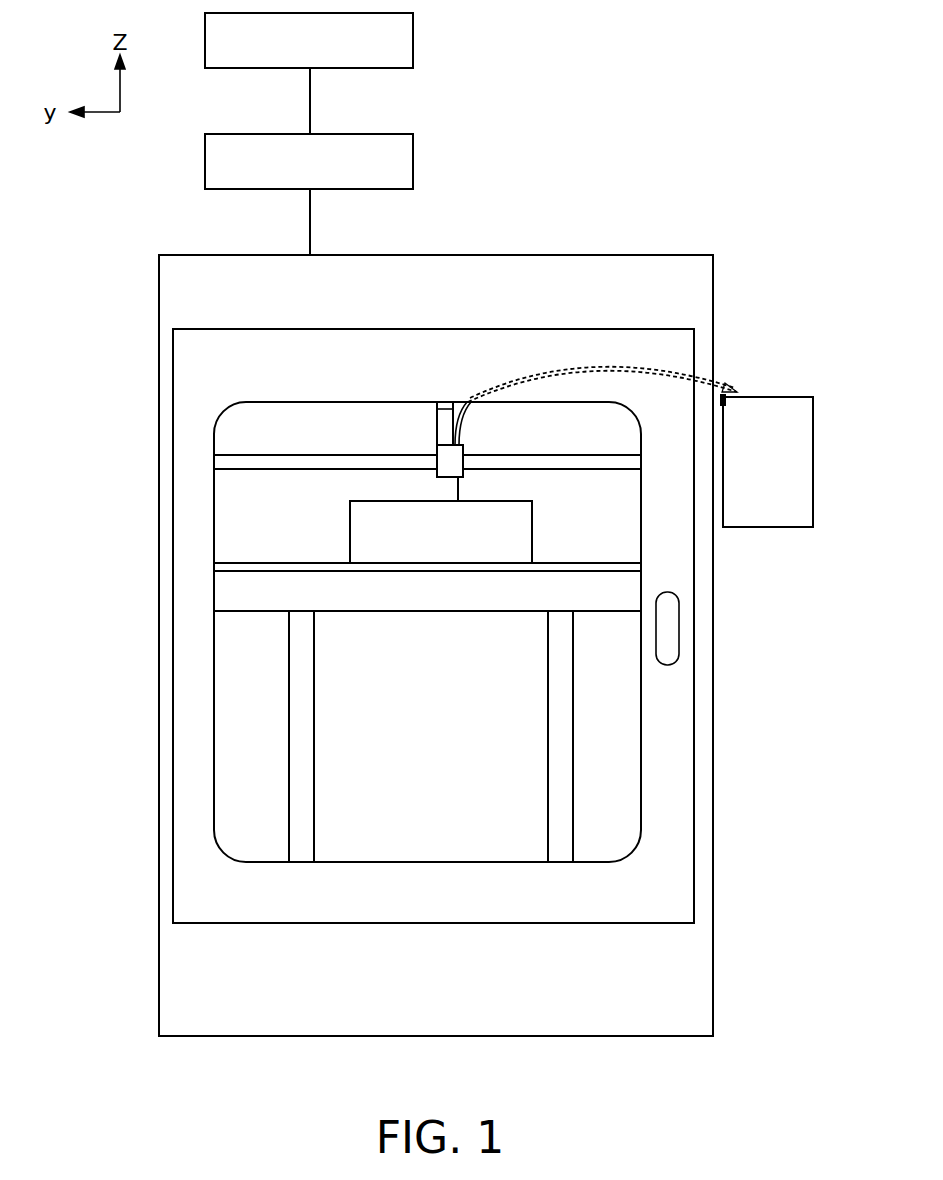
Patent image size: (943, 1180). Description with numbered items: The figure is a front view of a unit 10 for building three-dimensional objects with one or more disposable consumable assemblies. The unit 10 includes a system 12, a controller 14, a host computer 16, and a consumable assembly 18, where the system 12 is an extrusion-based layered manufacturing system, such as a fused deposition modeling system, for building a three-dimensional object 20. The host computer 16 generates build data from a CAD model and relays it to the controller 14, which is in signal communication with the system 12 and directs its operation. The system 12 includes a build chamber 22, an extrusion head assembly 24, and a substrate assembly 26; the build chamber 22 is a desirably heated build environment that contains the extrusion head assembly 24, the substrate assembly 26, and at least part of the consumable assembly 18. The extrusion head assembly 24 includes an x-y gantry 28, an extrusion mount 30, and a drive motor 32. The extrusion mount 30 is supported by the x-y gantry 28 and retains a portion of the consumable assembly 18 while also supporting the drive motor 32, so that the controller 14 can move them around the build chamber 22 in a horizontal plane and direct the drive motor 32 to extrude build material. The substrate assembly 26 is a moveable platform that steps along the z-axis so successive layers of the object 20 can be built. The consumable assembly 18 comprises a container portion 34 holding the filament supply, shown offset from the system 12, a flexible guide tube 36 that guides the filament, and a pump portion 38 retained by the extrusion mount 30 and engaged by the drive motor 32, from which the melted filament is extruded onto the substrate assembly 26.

The unit 10 is at (745, 175).
The system 12 is at (155, 258).
The controller 14 is at (413, 147).
The host computer 16 is at (413, 25).
The consumable assembly 18 is at (777, 438).
The 3D object 20 is at (433, 533).
The build chamber 22 is at (633, 762).
The extrusion head assembly 24 is at (380, 430).
The substrate assembly 26 is at (245, 598).
The x-y gantry 28 is at (240, 465).
The extrusion mount 30 is at (448, 472).
The drive motor 32 is at (436, 428).
The container portion 34 is at (762, 520).
The guide tube 36 is at (583, 368).
The pump portion 38 is at (478, 438).